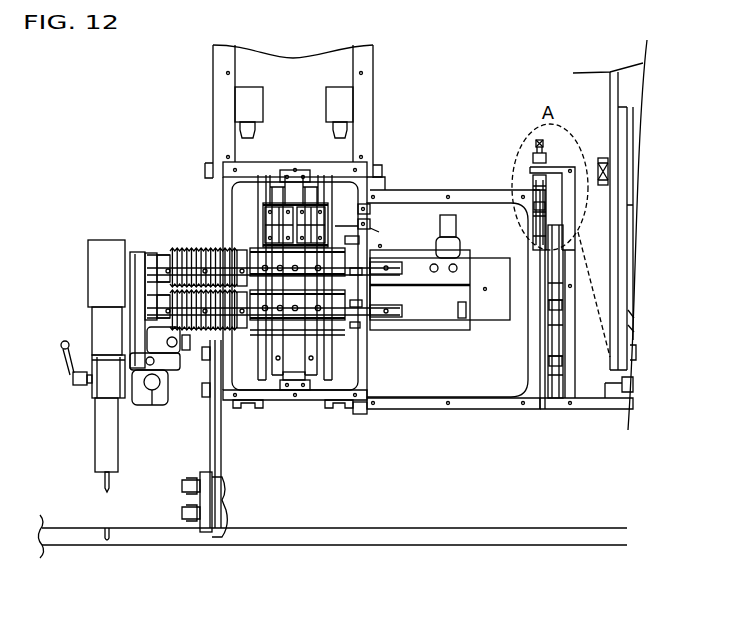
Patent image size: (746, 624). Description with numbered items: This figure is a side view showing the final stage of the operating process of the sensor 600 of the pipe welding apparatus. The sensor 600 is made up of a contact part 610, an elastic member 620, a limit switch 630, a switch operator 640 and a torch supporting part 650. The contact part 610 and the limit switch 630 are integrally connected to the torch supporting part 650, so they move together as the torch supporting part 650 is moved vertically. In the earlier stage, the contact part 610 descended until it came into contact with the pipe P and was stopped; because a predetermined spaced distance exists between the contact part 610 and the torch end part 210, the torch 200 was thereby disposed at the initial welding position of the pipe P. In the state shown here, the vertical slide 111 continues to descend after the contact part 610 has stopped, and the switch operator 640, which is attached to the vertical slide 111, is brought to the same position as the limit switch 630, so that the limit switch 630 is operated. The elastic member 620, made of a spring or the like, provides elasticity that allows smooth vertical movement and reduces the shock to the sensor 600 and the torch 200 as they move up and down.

The torch 200 is at (88, 270).
The torch end part 210 is at (100, 480).
The sensor 600 is at (218, 452).
The contact part 610 is at (212, 540).
The pipe P is at (405, 545).
The elastic member 620 is at (515, 182).
The limit switch 630 is at (567, 233).
The switch operator 640 is at (562, 183).
The torch supporting part 650 is at (480, 409).
The vertical slide 111 is at (592, 380).